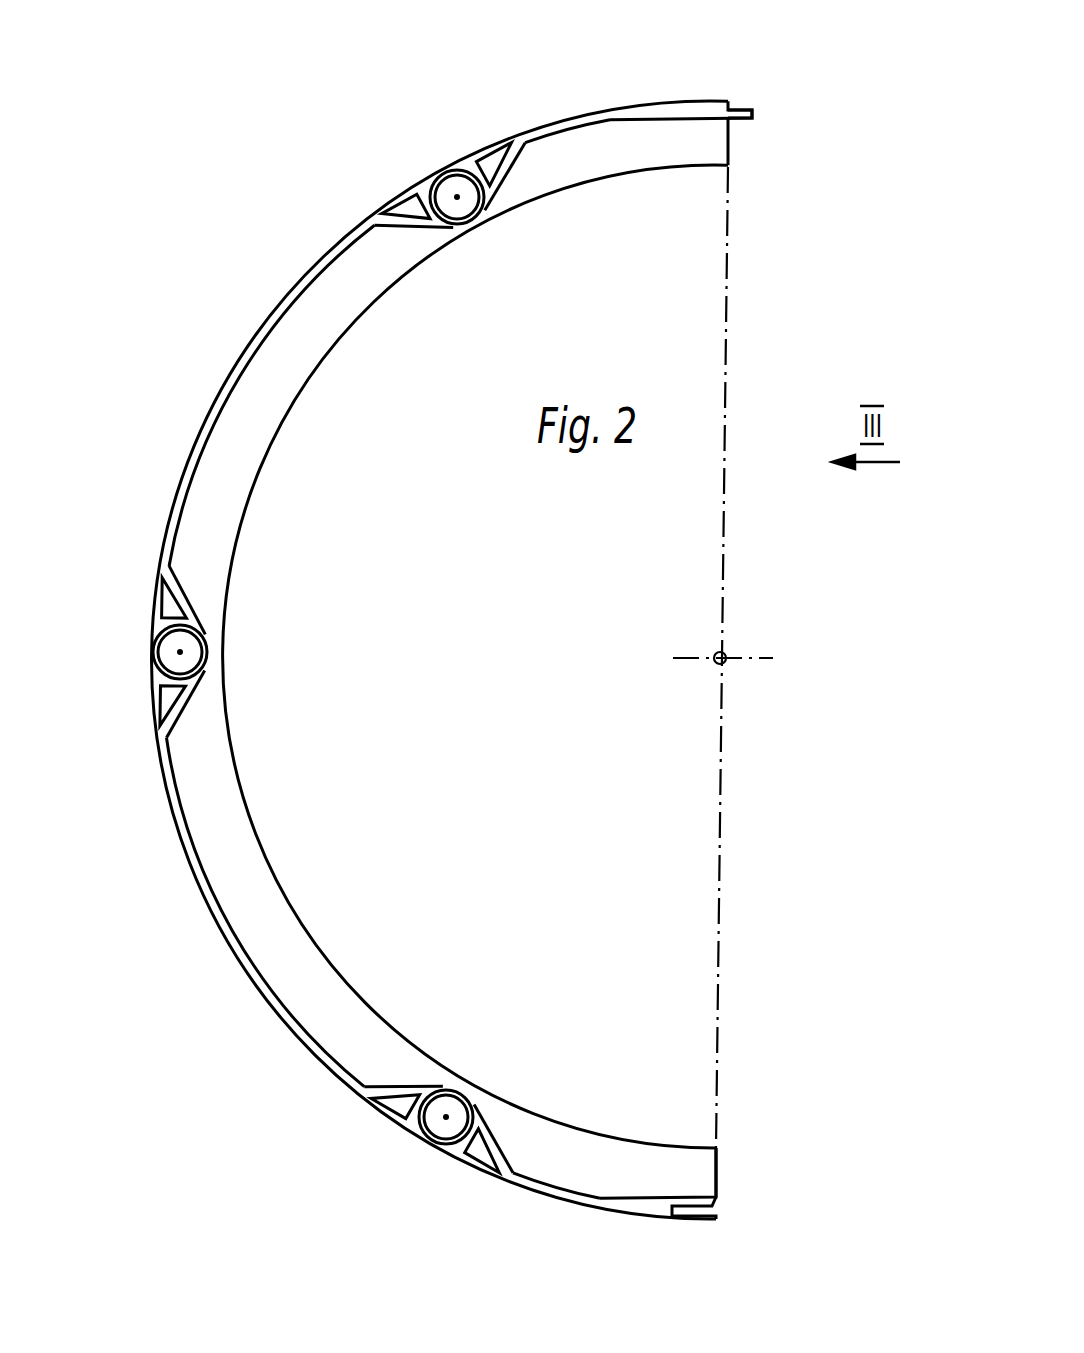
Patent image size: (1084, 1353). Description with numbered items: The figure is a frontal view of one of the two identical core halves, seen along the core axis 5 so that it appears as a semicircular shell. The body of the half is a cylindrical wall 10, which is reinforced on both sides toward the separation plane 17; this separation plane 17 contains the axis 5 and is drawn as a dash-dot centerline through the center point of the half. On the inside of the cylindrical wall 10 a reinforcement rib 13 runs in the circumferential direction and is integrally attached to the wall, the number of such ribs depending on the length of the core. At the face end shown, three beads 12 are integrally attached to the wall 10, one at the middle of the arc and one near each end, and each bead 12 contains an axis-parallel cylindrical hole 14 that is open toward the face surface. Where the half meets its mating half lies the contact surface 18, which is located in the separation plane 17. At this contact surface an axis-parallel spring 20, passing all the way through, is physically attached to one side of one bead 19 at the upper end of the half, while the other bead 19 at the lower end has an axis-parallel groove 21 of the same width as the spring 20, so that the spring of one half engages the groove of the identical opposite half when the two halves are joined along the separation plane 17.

The cylindrical wall 10 is at (200, 432).
The beads 12 is at (493, 196).
The reinforcement ribs 13 is at (220, 824).
The cylindrical holes 14 is at (466, 160).
The separation plane 17 is at (722, 607).
The contact surface 18 is at (720, 1166).
The bead 19 is at (684, 108).
The spring 20 is at (740, 110).
The groove 21 is at (718, 1208).
The axis 5 is at (725, 668).